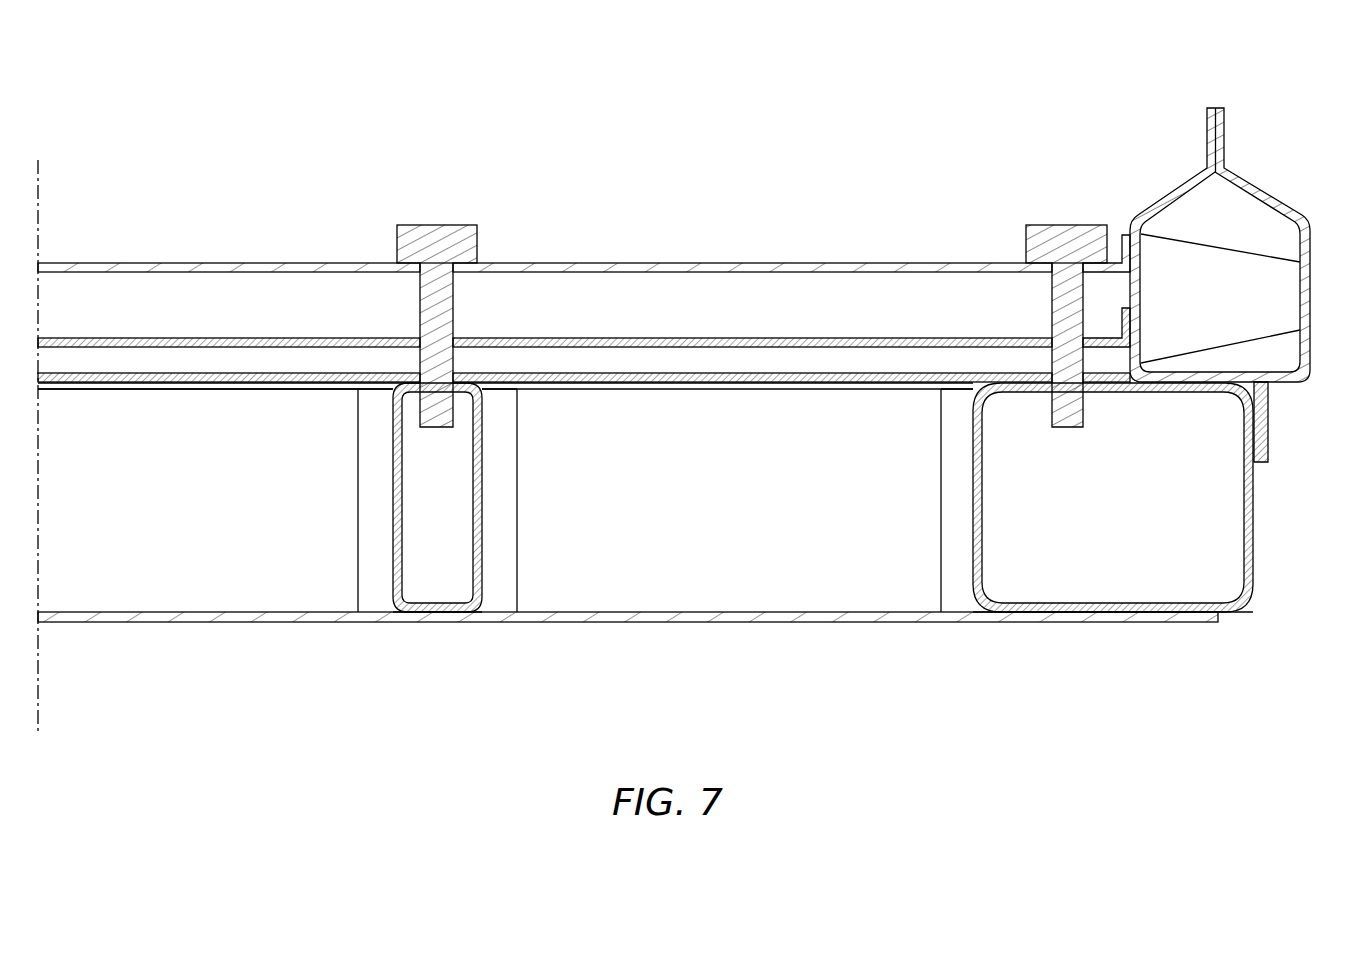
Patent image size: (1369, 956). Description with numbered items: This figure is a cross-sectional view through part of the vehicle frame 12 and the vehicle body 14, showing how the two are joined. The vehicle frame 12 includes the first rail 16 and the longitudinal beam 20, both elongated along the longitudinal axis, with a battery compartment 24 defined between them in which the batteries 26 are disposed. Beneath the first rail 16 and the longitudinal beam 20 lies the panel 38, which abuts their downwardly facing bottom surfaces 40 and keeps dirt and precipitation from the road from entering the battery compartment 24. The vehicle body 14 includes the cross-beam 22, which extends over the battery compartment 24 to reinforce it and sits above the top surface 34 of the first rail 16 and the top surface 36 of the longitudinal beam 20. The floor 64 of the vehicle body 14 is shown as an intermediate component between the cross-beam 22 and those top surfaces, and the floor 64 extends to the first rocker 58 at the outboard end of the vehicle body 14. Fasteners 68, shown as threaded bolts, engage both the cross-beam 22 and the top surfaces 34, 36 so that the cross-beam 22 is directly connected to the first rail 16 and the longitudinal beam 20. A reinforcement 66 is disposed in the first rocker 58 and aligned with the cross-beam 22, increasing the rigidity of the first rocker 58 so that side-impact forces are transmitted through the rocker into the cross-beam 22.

The vehicle frame 12 is at (1275, 605).
The vehicle body 14 is at (1278, 124).
The first rail 16 is at (1222, 528).
The longitudinal beam 20 is at (445, 580).
The cross-beam 22 is at (758, 262).
The battery compartment 24 is at (378, 585).
The batteries 26 is at (188, 588).
The top surface 34 is at (1270, 372).
The top surface 36 is at (412, 380).
The panel 38 is at (815, 622).
The bottom surface 40 is at (422, 624).
The first rocker 58 is at (1265, 195).
The floor 64 is at (205, 338).
The reinforcement 66 is at (1285, 278).
The fastener 68 is at (436, 224).